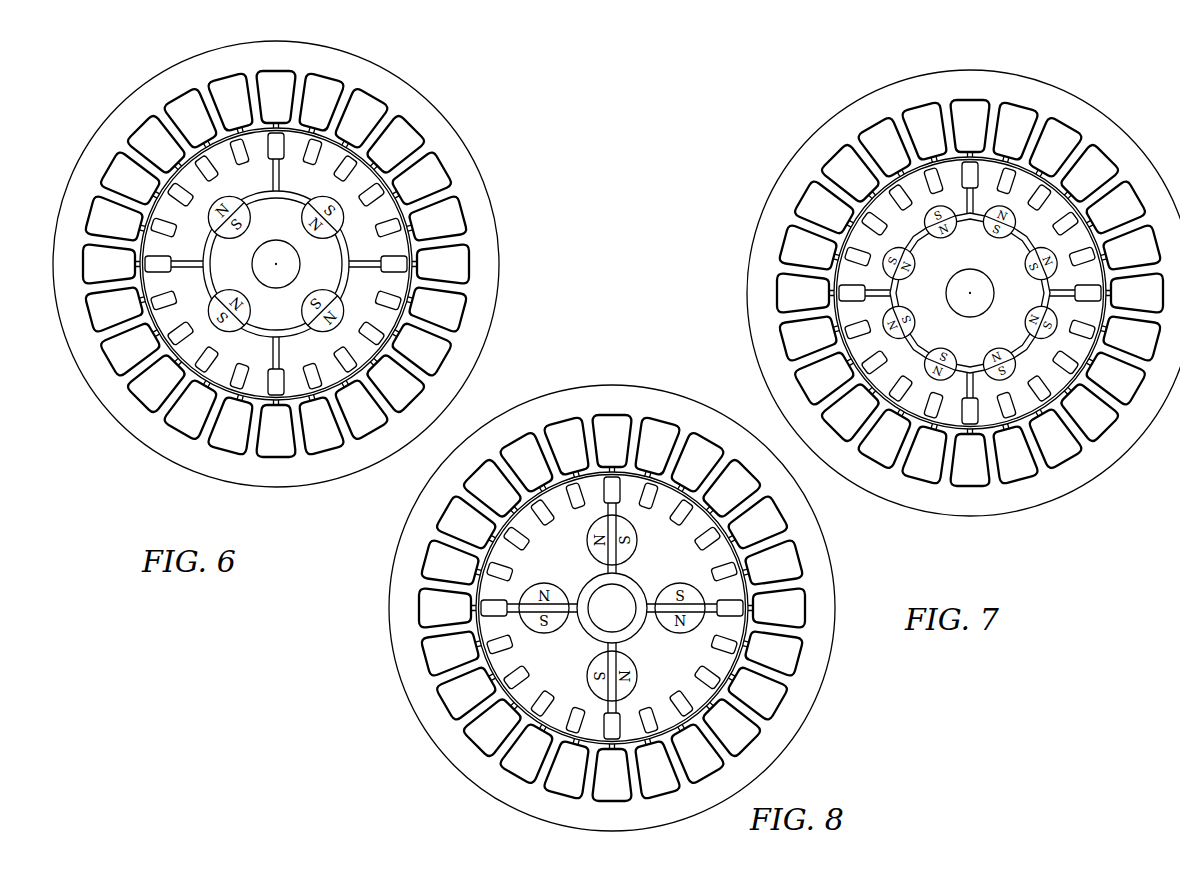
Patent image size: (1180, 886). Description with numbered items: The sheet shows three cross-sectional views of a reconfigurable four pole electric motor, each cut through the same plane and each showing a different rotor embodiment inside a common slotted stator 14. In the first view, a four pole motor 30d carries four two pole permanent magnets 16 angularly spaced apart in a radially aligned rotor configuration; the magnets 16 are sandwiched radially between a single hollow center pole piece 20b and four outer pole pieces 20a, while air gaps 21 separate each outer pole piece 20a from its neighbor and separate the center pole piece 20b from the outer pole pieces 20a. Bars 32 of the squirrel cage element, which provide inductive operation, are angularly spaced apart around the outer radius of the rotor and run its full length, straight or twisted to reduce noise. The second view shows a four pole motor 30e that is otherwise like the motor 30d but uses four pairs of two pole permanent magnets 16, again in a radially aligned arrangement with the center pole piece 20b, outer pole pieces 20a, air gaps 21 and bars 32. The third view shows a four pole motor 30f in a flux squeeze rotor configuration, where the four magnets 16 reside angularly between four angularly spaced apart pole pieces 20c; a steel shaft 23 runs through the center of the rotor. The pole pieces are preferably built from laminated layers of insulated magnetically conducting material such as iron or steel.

In FIG. 6, the stator 14 is at (230, 436).
In FIG. 7, the stator 14 is at (790, 252).
In FIG. 8, the stator 14 is at (484, 741).
In FIG. 6, the two pole permanent magnet 16 is at (309, 202).
In FIG. 7, the two pole permanent magnet 16 is at (917, 246).
In FIG. 8, the two pole permanent magnet 16 is at (598, 548).
In FIG. 6, the outer pole piece 20a is at (297, 386).
In FIG. 7, the outer pole piece 20a is at (994, 412).
In FIG. 6, the center pole piece 20b is at (281, 239).
In FIG. 7, the center pole piece 20b is at (974, 324).
In FIG. 8, the pole piece 20c is at (735, 627).
In FIG. 6, the air gap 21 is at (272, 178).
In FIG. 7, the air gap 21 is at (968, 215).
In FIG. 8, the steel shaft 23 is at (601, 515).
In FIG. 6, the four pole motor 30d is at (90, 95).
In FIG. 7, the four pole motor 30e is at (797, 102).
In FIG. 8, the four pole motor 30f is at (376, 722).
In FIG. 6, the bar 32 is at (236, 384).
In FIG. 7, the bar 32 is at (873, 222).
In FIG. 8, the bar 32 is at (557, 732).